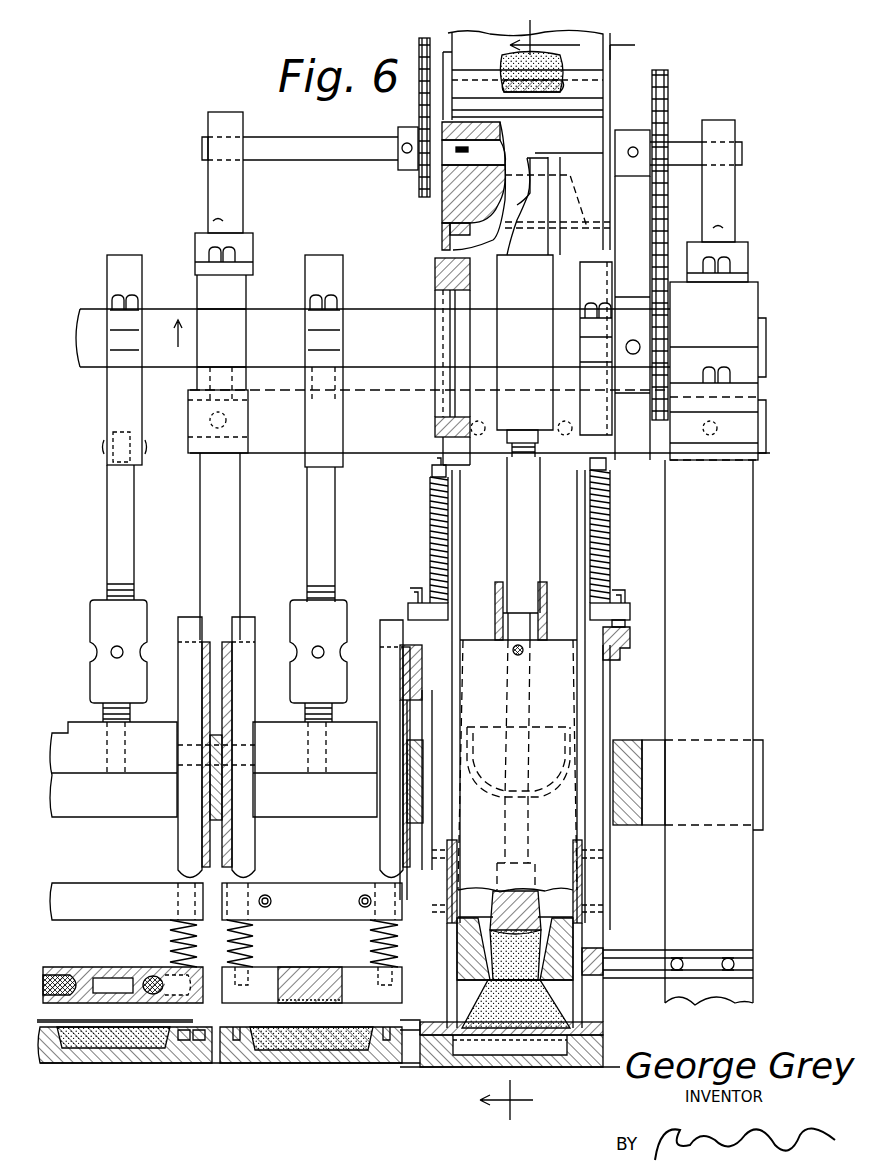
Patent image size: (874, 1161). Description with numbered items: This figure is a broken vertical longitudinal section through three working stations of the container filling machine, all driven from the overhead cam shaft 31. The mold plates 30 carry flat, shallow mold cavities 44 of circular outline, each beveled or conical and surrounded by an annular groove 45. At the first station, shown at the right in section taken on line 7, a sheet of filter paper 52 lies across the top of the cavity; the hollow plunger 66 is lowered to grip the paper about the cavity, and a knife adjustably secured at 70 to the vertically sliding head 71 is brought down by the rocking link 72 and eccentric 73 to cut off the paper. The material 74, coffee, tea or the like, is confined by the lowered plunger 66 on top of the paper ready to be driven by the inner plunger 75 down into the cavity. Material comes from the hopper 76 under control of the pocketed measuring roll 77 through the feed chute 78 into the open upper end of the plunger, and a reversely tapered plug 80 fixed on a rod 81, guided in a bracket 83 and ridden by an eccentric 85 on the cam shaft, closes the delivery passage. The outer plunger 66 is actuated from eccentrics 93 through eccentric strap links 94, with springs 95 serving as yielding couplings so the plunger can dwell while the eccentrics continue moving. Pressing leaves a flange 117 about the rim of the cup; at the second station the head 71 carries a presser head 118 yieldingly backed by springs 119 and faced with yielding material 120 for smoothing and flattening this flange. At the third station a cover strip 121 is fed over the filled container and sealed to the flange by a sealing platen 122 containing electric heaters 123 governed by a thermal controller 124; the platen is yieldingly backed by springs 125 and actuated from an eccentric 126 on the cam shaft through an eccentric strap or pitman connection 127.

The section line 7— 7 is at (552, 40).
The mold plate 30 is at (603, 1045).
The overhead cam shaft 31 is at (362, 318).
The mold cavity 44 is at (465, 1048).
The annular groove 45 is at (380, 1050).
The filter paper 52 is at (560, 1035).
The hollow plunger 66 is at (582, 985).
The knife securing means 70 is at (362, 896).
The vertically sliding head 71 is at (312, 901).
The rocking link 72 is at (336, 542).
The eccentric 73 is at (343, 283).
The material 74 is at (460, 1000).
The inner plunger 75 is at (667, 980).
The hopper 76 is at (550, 140).
The pocketed measuring roll 77 is at (526, 188).
The feed chute 78 is at (490, 790).
The reversely tapered plug 80 is at (515, 934).
The rod 81 is at (530, 538).
The bracket 83 is at (547, 605).
The eccentric 85 is at (528, 293).
The eccentrics 93 is at (437, 305).
The eccentric strap links 94 is at (450, 490).
The springs 95 is at (611, 532).
The flange 117 is at (205, 1030).
The presser head 118 is at (325, 978).
The springs 119 is at (370, 940).
The yielding facing material 120 is at (233, 1040).
The cover strip 121 is at (125, 1040).
The sealing platen 122 is at (93, 978).
The electric heater 123 is at (55, 975).
The thermal controller 124 is at (143, 975).
The springs 125 is at (165, 960).
The eccentric 126 is at (108, 258).
The eccentric strap or pitman connection 127 is at (105, 478).